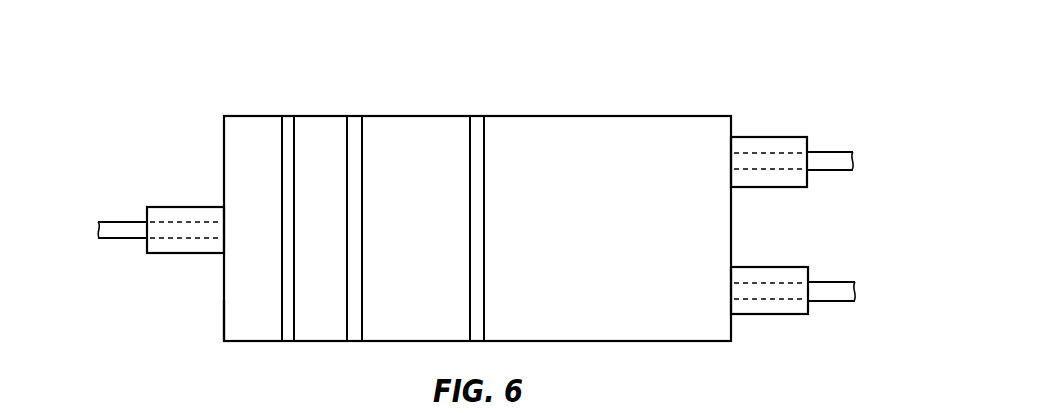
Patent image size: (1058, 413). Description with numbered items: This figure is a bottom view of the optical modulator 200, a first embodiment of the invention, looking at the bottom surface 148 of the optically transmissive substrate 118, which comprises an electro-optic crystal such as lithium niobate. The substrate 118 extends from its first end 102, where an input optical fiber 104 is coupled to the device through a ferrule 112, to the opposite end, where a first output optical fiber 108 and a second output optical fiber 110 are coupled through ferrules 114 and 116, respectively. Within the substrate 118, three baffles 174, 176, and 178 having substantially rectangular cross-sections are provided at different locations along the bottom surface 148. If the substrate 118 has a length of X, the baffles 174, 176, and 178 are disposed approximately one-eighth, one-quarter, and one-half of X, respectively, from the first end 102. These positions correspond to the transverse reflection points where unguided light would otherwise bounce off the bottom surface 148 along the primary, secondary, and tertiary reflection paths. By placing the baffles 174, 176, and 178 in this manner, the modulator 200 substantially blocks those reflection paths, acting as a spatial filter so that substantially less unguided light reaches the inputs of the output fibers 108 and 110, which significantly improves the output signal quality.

The first end 102 is at (223, 133).
The input optical fiber 104 is at (120, 222).
The first output optical fiber 108 is at (833, 302).
The second output optical fiber 110 is at (833, 152).
The ferrule 112 is at (178, 207).
The ferrule 114 is at (766, 315).
The ferrule 116 is at (763, 137).
The optically transmissive substrate 118 is at (225, 341).
The bottom surface 148 is at (718, 329).
The baffle 174 is at (285, 116).
The baffle 176 is at (353, 116).
The baffle 178 is at (477, 116).
The optical modulator 200 is at (588, 86).